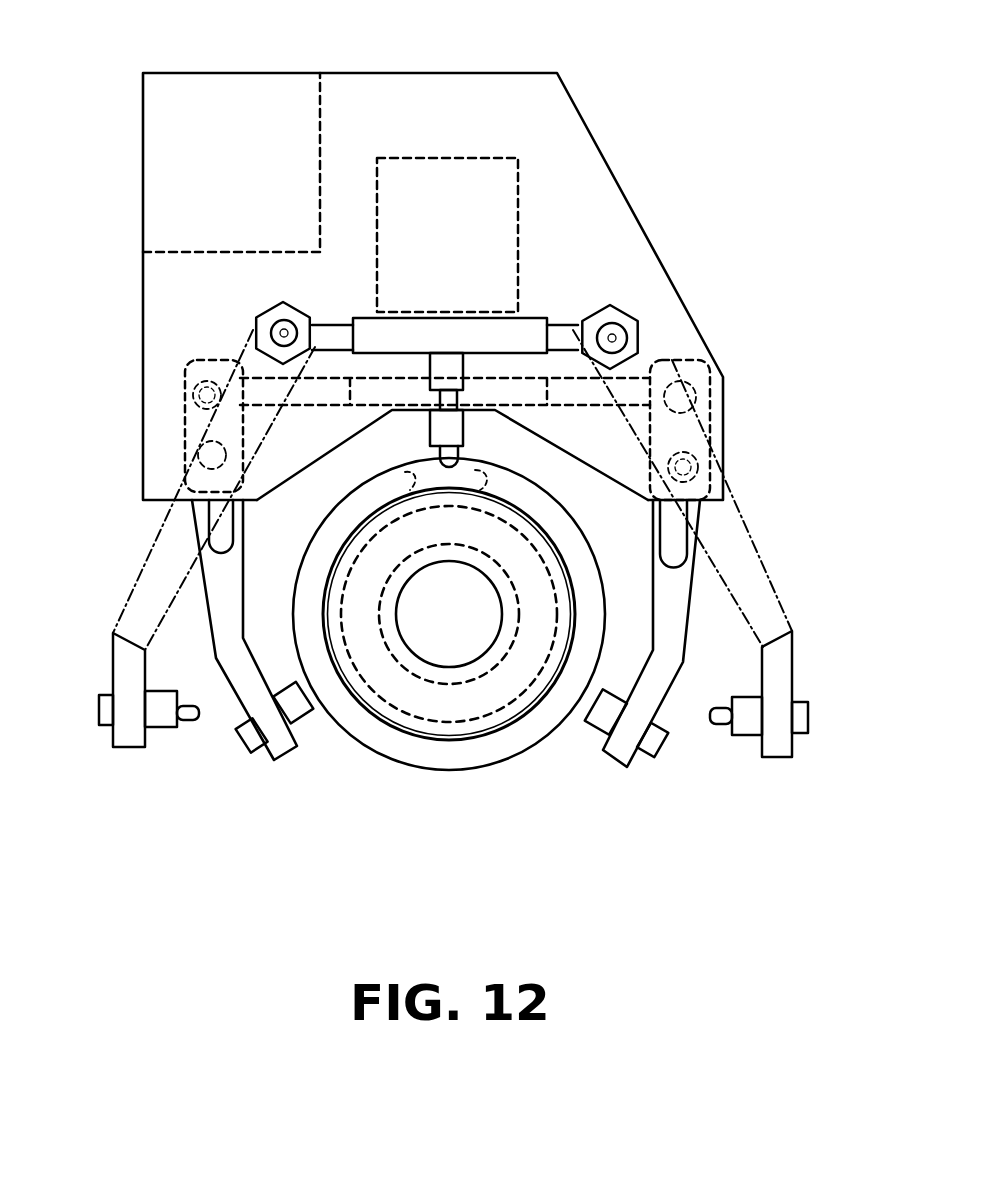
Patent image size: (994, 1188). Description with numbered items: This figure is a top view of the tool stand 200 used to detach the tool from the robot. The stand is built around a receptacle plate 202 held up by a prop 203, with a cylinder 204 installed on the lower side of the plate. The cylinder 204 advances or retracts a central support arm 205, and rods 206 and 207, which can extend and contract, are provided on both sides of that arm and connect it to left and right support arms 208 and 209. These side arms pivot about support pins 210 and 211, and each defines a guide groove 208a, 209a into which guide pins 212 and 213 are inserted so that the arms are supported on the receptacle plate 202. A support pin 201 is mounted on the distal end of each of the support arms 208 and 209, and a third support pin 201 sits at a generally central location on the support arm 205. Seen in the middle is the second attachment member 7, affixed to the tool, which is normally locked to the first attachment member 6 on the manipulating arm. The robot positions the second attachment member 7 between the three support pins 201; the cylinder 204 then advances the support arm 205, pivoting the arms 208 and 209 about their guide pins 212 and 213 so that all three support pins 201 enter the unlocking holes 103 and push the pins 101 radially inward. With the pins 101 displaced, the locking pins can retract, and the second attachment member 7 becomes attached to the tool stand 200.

The tool stand 200 is at (836, 231).
The receptacle plate 202 is at (597, 203).
The prop 203 is at (300, 148).
The cylinder 204 is at (455, 178).
The support arm 205 is at (493, 390).
The rod 206 is at (335, 322).
The rod 207 is at (570, 323).
The support pin 210 is at (284, 333).
The support pin 211 is at (614, 337).
The guide pin 212 is at (196, 456).
The guide pin 213 is at (727, 473).
The support arm 208 is at (160, 553).
The support arm 209 is at (733, 530).
The guide groove 208a is at (247, 425).
The guide groove 209a is at (710, 443).
The support pin 201 is at (447, 403).
The unlocking hole 103 is at (465, 460).
The pin 101 is at (448, 482).
The first attachment member 6 is at (437, 698).
The second attachment member 7 is at (458, 762).